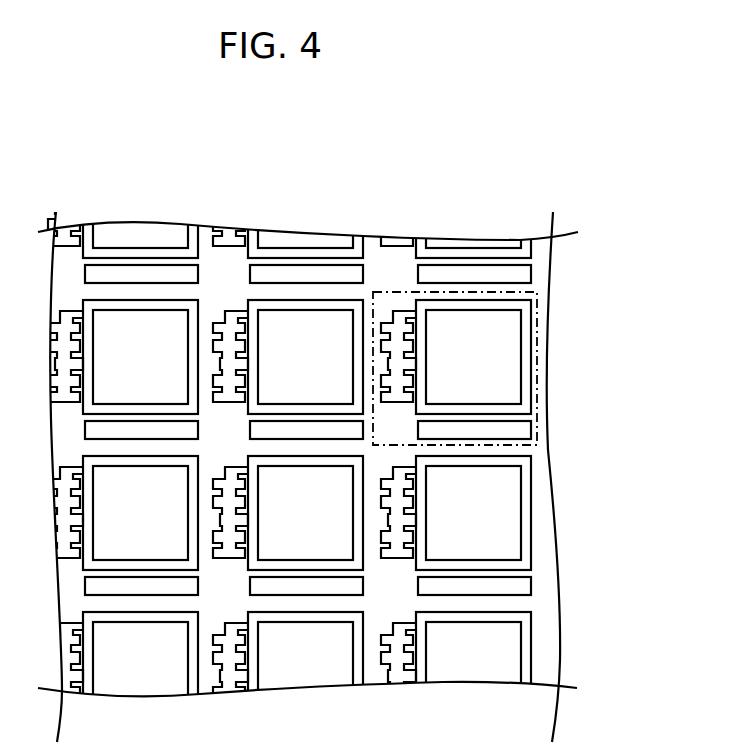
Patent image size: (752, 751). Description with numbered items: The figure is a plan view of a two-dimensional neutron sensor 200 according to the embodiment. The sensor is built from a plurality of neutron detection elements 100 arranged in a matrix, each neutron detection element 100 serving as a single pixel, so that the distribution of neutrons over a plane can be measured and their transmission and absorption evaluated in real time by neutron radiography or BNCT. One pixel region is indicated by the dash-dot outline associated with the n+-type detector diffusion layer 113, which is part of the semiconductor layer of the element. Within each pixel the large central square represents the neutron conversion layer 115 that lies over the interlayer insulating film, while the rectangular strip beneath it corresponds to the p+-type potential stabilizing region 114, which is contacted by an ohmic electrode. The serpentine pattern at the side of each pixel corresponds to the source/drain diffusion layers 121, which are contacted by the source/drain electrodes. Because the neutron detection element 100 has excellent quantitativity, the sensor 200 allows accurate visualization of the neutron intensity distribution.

The two-dimensional neutron sensor 200 is at (333, 183).
The neutron detection element 100 is at (450, 283).
The source/drain diffusion layers 121 is at (393, 314).
The n+-type detector diffusion layer 113 is at (536, 294).
The neutron conversion layer 115 is at (522, 342).
The p+-type potential stabilizing region 114 is at (532, 428).